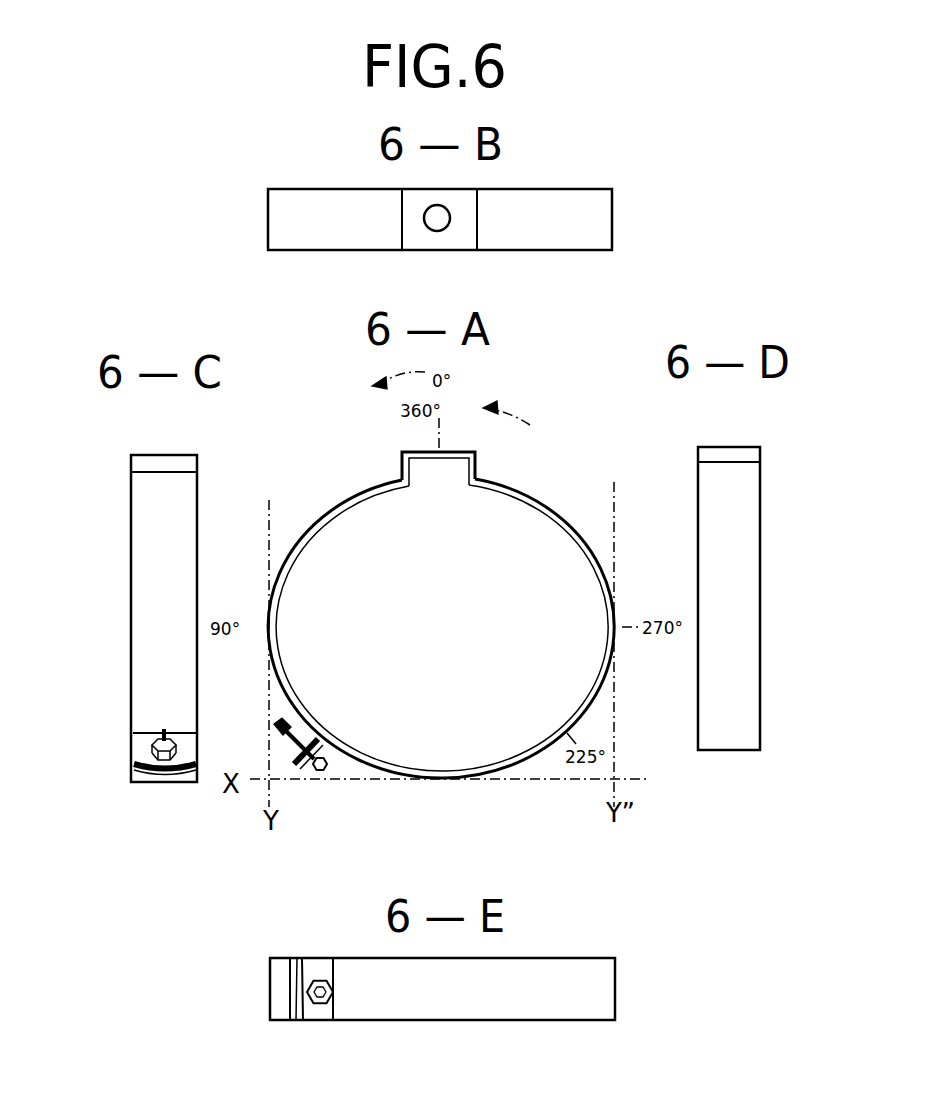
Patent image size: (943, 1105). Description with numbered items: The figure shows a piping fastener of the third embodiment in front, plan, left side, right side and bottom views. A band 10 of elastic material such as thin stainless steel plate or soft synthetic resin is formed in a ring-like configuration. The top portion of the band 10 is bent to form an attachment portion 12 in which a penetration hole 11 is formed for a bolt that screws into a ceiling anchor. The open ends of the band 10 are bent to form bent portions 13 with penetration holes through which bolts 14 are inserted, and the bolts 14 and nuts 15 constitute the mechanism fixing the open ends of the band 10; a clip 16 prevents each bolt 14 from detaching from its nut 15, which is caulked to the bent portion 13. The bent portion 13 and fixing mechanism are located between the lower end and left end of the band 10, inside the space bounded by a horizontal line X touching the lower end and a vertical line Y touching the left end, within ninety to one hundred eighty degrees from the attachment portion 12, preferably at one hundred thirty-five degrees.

The band 10 is at (312, 219).
The penetration hole 11 is at (433, 222).
The attachment portion 12 is at (453, 235).
The bent portion 13 is at (295, 762).
The bolt 14 is at (328, 758).
The nut 15 is at (300, 733).
The clip 16 is at (322, 742).